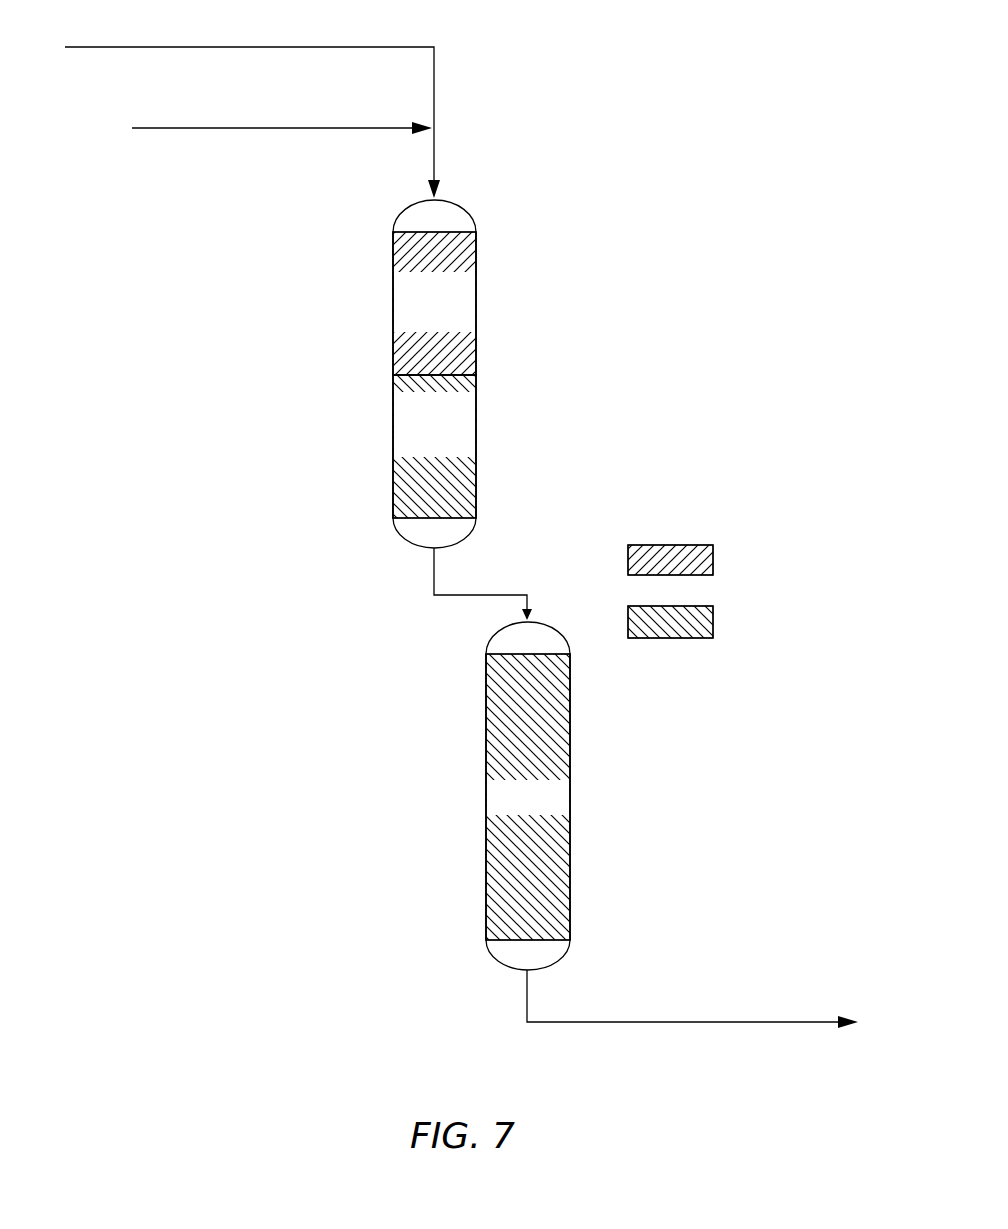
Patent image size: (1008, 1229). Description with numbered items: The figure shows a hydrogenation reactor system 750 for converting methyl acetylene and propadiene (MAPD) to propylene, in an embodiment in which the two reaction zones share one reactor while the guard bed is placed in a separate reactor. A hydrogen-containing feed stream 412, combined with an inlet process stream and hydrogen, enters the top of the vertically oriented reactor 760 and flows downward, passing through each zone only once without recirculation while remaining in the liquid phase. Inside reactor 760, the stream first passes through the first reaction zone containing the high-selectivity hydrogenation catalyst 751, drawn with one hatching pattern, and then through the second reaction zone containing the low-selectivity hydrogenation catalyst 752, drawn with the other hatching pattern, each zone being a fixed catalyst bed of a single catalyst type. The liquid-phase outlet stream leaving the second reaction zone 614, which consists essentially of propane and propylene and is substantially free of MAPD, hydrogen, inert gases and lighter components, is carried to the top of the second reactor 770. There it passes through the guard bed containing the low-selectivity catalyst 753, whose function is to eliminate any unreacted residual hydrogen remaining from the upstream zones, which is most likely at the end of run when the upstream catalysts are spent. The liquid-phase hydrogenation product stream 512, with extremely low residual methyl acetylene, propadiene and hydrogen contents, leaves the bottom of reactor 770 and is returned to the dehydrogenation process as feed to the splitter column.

The hydrogenation reactor system 750 is at (665, 124).
The hydrogen-containing feed stream 412 is at (279, 106).
The reactor 760 is at (393, 222).
The first reaction zone containing the high-selectivity hydrogenation catalyst 751 is at (398, 265).
The second reaction zone containing the low-selectivity hydrogenation catalyst 752 is at (400, 392).
The liquid-phase outlet stream leaving the second reaction zone 614 is at (483, 584).
The reactor 770 is at (486, 641).
The guard bed containing the low-selectivity catalyst 753 is at (498, 722).
The hydrogenation product stream 512 is at (692, 1027).